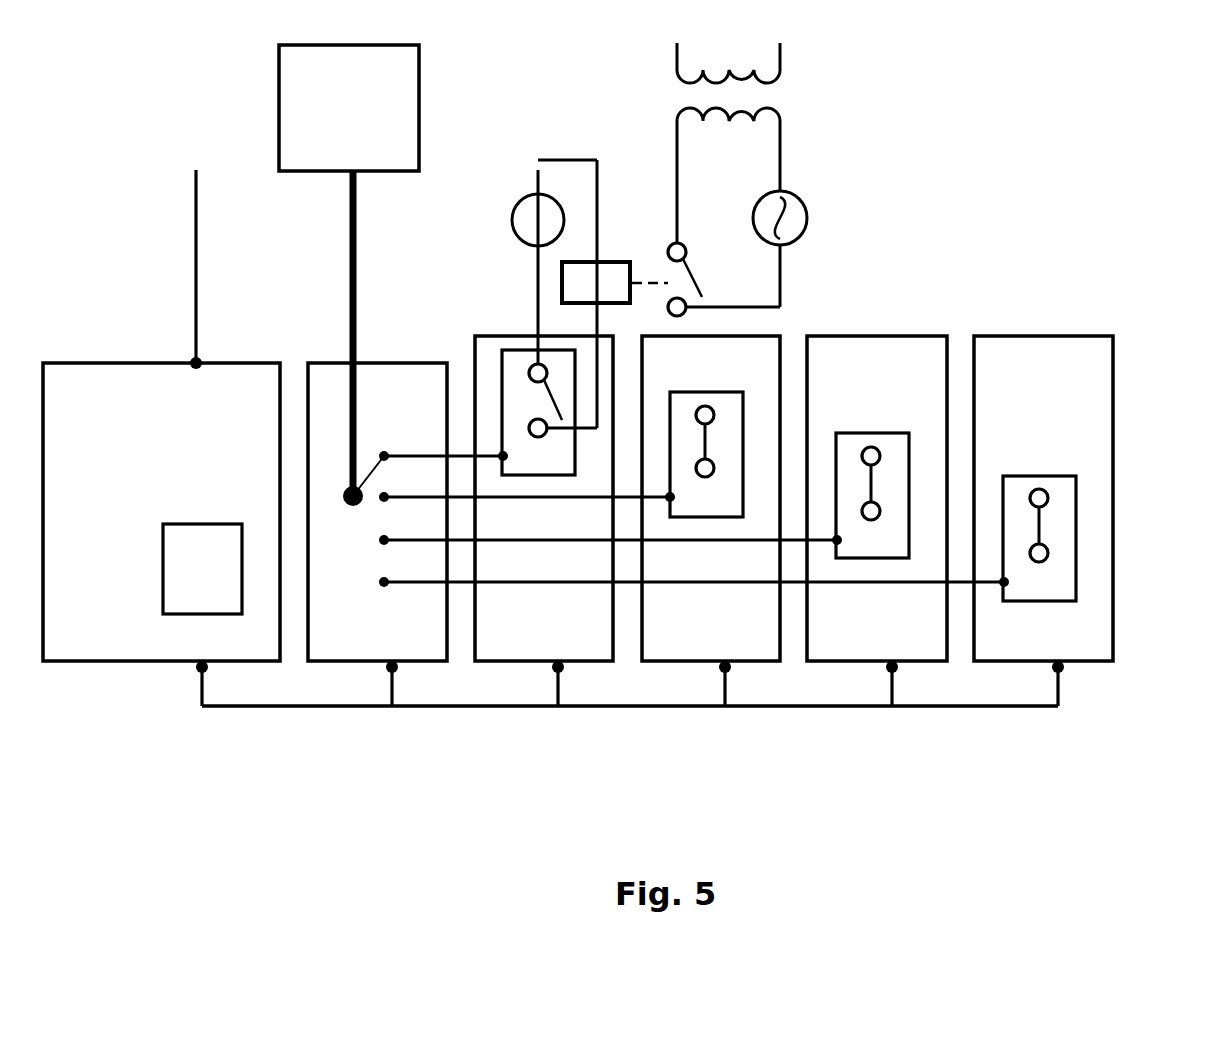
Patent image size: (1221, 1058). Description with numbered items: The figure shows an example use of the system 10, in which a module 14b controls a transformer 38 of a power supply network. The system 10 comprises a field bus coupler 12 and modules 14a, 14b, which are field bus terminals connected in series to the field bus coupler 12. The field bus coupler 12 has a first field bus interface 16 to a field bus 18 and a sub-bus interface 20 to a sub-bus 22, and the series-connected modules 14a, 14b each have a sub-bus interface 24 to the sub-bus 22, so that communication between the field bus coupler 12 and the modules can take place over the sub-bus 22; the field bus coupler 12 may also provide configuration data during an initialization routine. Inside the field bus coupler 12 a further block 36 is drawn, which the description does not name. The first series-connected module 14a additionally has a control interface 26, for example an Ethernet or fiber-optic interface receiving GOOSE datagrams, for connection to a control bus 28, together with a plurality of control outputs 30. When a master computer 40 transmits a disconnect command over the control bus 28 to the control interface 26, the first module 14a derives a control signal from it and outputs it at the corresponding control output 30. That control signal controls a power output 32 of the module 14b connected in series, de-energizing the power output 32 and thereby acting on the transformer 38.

The system 10 is at (972, 120).
The field bus coupler 12 is at (150, 653).
The first series-connected module 14a is at (360, 653).
The module 14b is at (526, 653).
The first field bus interface 16 is at (153, 338).
The field bus 18 is at (186, 226).
The sub-bus interface 20 is at (172, 691).
The sub-bus 22 is at (254, 729).
The sub-bus interface 24 is at (434, 726).
The control interface 26 is at (338, 472).
The control bus 28 is at (363, 320).
The control outputs 30 is at (387, 438).
The power output 32 is at (526, 466).
The memory 36 is at (190, 603).
The transformer 38 is at (811, 75).
The master computer 40 is at (338, 161).